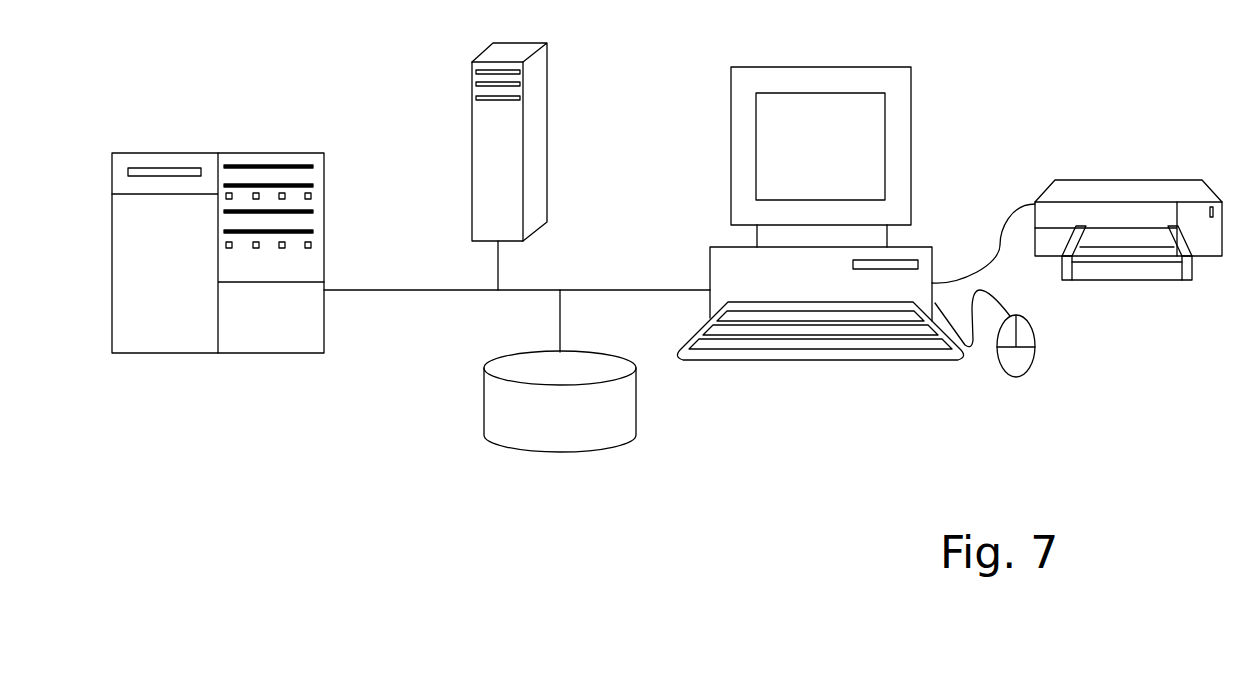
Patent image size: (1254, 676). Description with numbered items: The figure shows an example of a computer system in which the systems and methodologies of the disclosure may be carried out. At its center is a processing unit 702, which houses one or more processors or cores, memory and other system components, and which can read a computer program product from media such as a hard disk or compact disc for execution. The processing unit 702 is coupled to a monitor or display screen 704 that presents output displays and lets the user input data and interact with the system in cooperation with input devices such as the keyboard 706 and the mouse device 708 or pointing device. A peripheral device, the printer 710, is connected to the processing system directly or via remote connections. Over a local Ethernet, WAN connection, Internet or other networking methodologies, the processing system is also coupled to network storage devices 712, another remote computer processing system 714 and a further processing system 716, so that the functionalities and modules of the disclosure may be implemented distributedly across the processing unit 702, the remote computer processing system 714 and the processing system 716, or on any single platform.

The processing unit 702 is at (716, 270).
The monitor or display screen 704 is at (913, 165).
The keyboard 706 is at (880, 363).
The mouse device 708 is at (1036, 362).
The printer 710 is at (1127, 178).
The network storage devices 712 is at (575, 450).
The remote computer processing system 714 is at (549, 128).
The processing system 716 is at (264, 151).